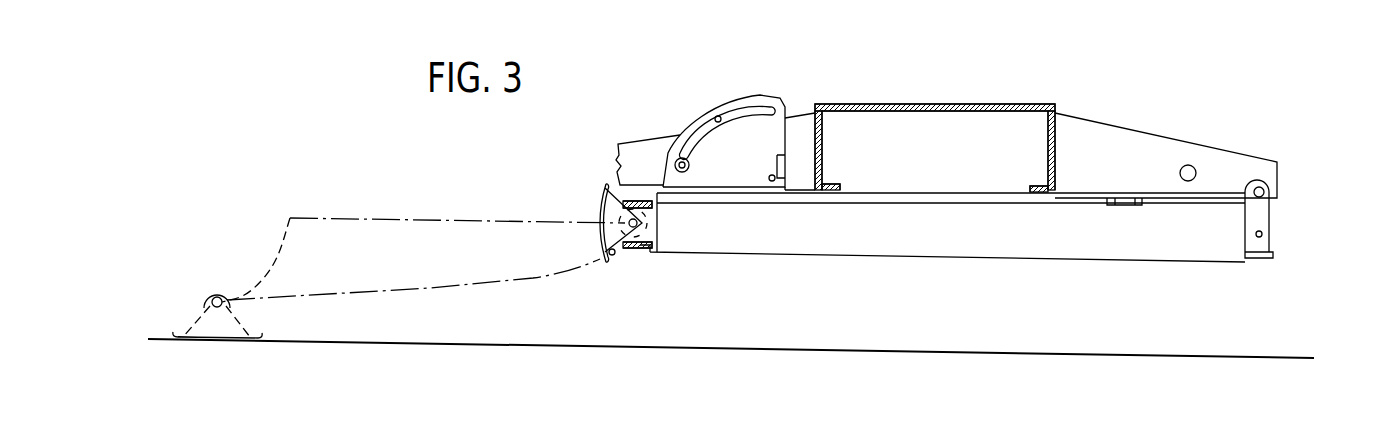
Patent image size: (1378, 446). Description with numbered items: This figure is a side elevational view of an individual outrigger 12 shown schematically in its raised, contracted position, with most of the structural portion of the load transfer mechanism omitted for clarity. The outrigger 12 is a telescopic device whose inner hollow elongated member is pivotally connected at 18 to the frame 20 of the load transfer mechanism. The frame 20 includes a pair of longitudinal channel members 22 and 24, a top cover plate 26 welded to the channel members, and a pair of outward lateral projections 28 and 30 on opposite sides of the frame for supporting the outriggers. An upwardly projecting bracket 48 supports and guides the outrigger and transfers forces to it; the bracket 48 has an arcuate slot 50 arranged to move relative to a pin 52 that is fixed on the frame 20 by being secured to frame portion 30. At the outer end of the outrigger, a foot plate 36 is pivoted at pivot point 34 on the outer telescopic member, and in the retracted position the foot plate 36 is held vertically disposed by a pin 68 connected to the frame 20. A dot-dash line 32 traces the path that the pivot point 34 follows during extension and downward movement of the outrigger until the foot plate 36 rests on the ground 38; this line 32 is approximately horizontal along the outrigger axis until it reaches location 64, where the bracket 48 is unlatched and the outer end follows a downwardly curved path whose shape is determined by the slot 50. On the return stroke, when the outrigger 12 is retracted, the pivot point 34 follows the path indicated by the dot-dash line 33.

The individual outrigger 12 is at (945, 266).
The pivotal connection 18 is at (1268, 186).
The frame 20 is at (938, 156).
The longitudinal channel member 22 is at (822, 157).
The longitudinal channel member 24 is at (1048, 161).
The top cover plate 26 is at (930, 104).
The lateral projection 28 is at (1113, 135).
The lateral projection 30 is at (630, 145).
The dot-dash line 32 is at (370, 217).
The dot-dash line 33 is at (407, 290).
The pivot point 34 is at (645, 223).
The foot plate 36 is at (198, 313).
The ground 38 is at (523, 343).
The bracket 48 is at (737, 95).
The slot 50 is at (715, 117).
The pin 52 is at (682, 158).
The location 64 is at (290, 218).
The pin 68 is at (615, 255).